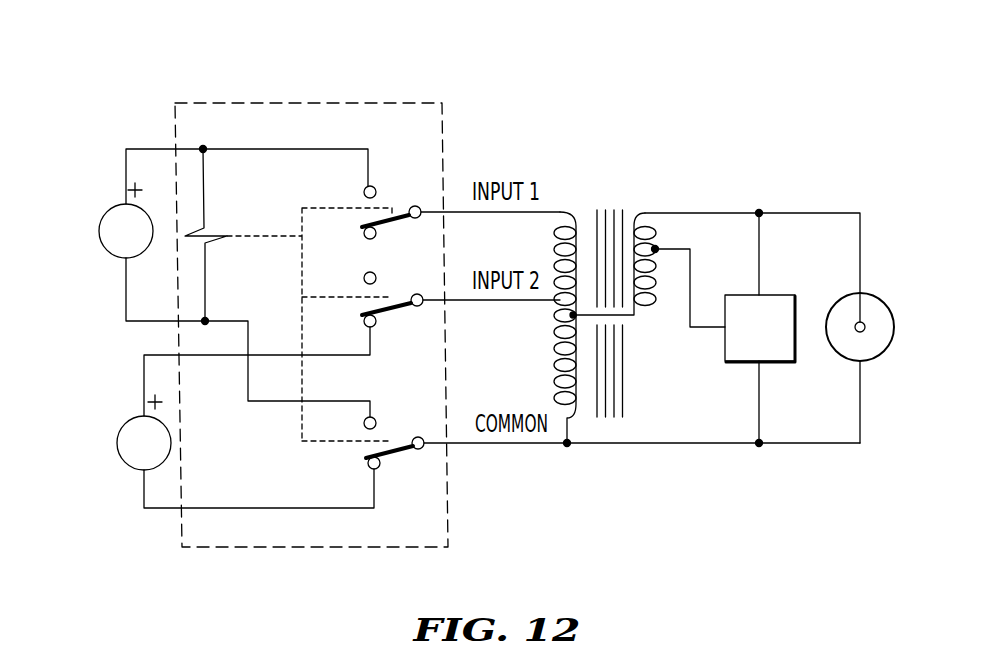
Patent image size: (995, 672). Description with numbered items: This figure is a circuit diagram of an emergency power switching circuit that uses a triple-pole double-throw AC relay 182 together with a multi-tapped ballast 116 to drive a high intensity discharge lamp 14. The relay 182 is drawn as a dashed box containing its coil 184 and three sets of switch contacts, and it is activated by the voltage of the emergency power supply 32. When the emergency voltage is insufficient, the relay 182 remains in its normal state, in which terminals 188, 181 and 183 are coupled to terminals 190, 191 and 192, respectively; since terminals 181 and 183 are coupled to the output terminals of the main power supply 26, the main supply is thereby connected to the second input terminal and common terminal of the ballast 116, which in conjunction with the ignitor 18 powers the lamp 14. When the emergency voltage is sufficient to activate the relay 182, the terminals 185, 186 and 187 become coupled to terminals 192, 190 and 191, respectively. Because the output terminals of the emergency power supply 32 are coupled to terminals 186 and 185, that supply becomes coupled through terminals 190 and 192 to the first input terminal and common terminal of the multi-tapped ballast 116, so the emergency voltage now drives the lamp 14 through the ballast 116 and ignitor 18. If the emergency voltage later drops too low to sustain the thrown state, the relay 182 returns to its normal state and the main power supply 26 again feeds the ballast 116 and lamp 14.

The triple-pole double-throw AC relay 182 is at (448, 92).
The relay coil K 184 is at (218, 232).
The emergency power supply 32 is at (140, 251).
The main power supply 26 is at (130, 467).
The terminal 186 is at (376, 187).
The terminal 190 is at (420, 207).
The terminal 188 is at (375, 239).
The terminal 187 is at (366, 273).
The terminal 191 is at (424, 295).
The terminal 181 is at (376, 327).
The terminal 185 is at (377, 418).
The terminal 192 is at (425, 448).
The terminal 183 is at (379, 470).
The multi-tapped ballast 116 is at (634, 194).
The ignitor 18 is at (734, 362).
The high intensity discharge lamp 14 is at (850, 296).